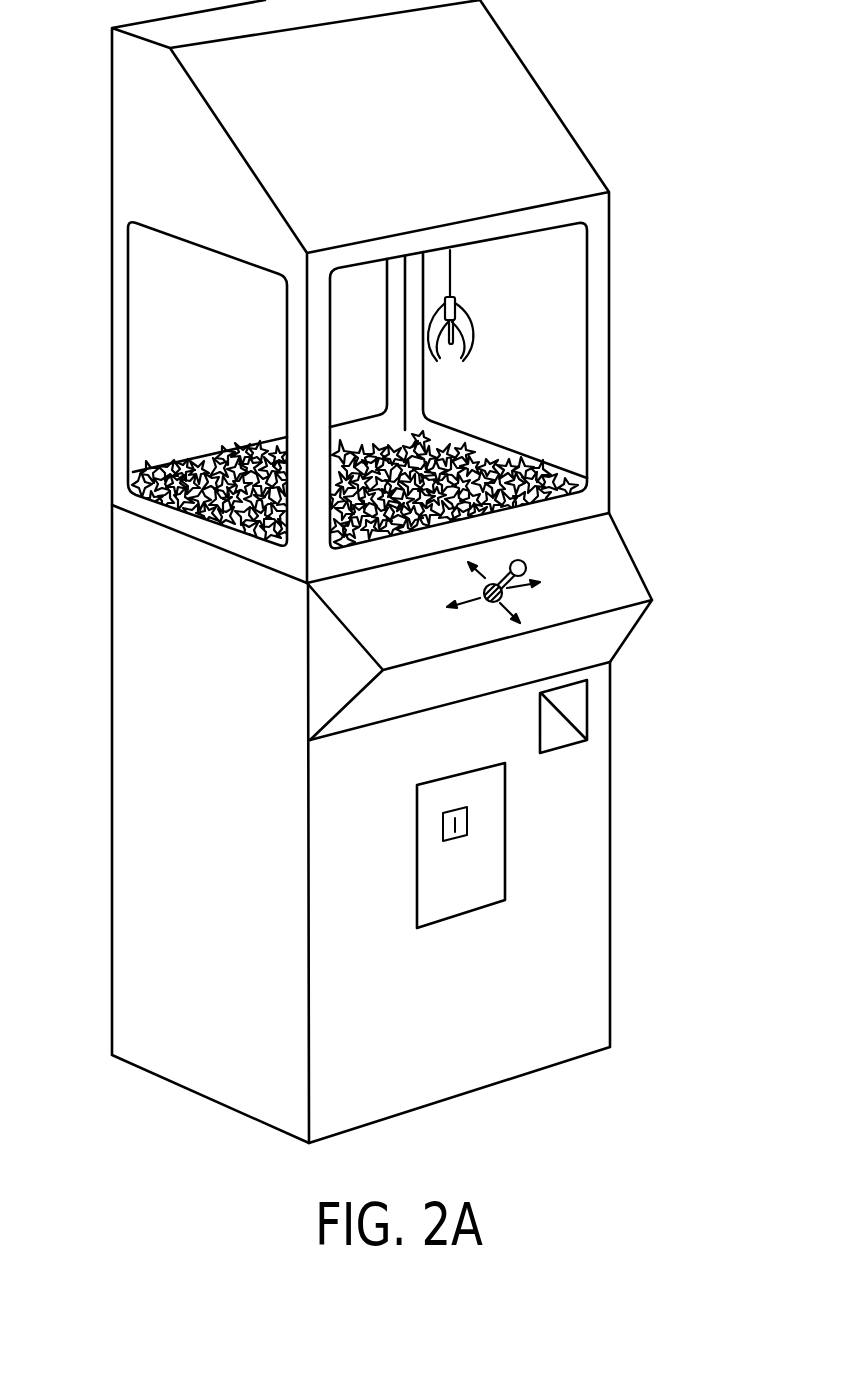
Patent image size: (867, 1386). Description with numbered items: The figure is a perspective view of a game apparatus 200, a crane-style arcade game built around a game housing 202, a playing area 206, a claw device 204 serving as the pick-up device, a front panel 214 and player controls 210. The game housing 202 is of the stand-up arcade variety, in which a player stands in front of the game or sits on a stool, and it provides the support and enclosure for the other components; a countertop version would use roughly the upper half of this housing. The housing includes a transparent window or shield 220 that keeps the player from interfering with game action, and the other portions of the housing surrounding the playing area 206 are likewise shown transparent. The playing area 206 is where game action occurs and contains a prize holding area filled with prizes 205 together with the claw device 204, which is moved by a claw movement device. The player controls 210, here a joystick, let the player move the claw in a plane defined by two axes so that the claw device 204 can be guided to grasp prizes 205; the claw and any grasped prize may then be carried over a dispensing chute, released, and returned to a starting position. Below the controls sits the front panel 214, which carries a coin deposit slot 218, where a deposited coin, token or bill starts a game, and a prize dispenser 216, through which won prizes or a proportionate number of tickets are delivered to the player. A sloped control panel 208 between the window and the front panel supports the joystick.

The game apparatus 200 is at (660, 118).
The game housing 202 is at (148, 624).
The claw device 204 is at (483, 306).
The prizes 205 is at (200, 506).
The playing area 206 is at (171, 437).
The control panel 208 is at (628, 586).
The player controls 210 is at (546, 549).
The front panel 214 is at (592, 852).
The prize dispenser 216 is at (564, 727).
The coin deposit slot 218 is at (453, 897).
The transparent window 220 is at (572, 404).